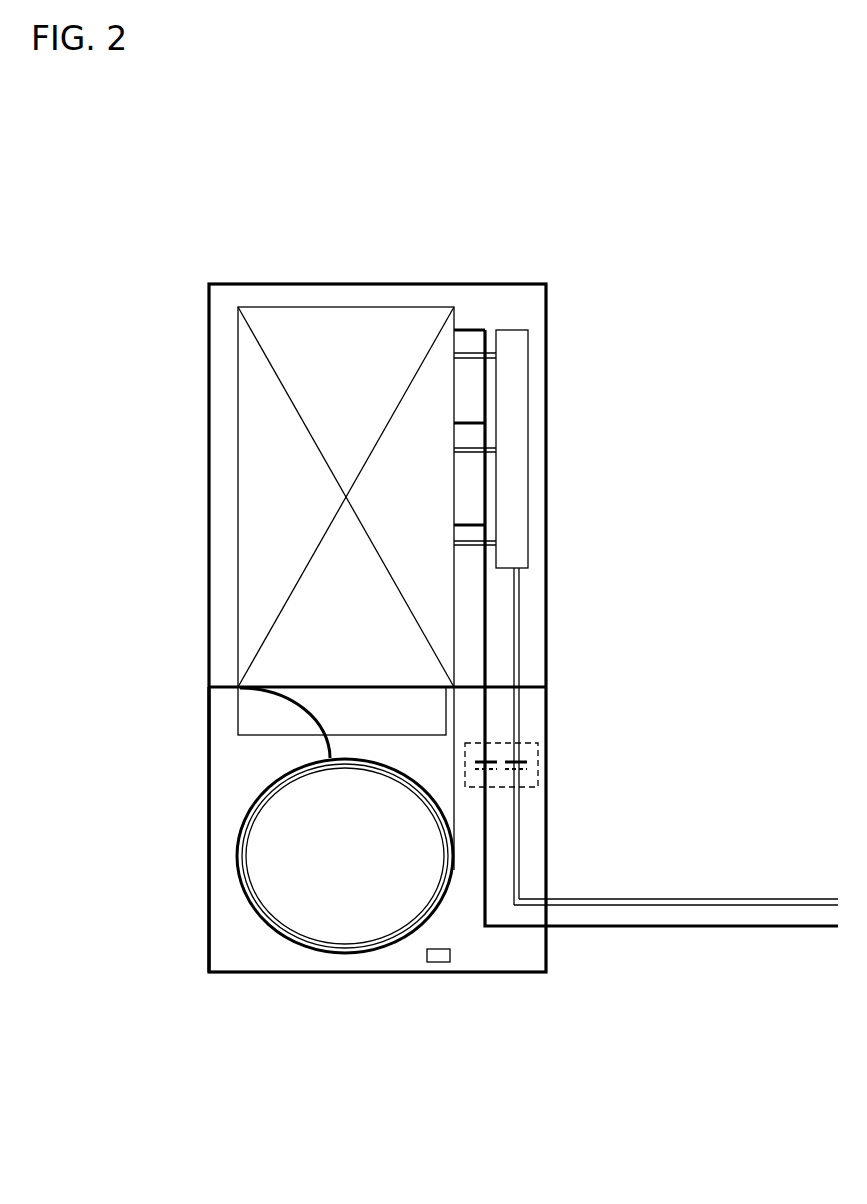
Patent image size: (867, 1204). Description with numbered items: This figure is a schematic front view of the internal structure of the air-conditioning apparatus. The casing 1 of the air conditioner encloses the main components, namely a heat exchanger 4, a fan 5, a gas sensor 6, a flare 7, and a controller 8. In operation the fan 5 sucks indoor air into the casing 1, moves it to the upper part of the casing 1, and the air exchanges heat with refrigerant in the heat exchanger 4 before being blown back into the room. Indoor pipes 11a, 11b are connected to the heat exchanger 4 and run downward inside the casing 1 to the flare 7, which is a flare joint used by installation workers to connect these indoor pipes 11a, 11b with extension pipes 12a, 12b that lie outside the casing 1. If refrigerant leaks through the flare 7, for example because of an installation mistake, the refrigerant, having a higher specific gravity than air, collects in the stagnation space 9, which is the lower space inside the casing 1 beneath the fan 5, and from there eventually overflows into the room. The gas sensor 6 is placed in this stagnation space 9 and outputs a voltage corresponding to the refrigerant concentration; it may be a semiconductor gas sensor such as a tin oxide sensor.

The casing 1 is at (200, 245).
The heat exchanger 4 is at (238, 540).
The fan 5 is at (378, 935).
The gas sensor 6 is at (451, 955).
The flare 7 is at (548, 766).
The controller 8 is at (237, 706).
The stagnation space 9 is at (240, 927).
The indoor pipe 11a is at (518, 587).
The indoor pipe 11b is at (488, 637).
The extension pipe 12a is at (716, 897).
The extension pipe 12b is at (692, 928).